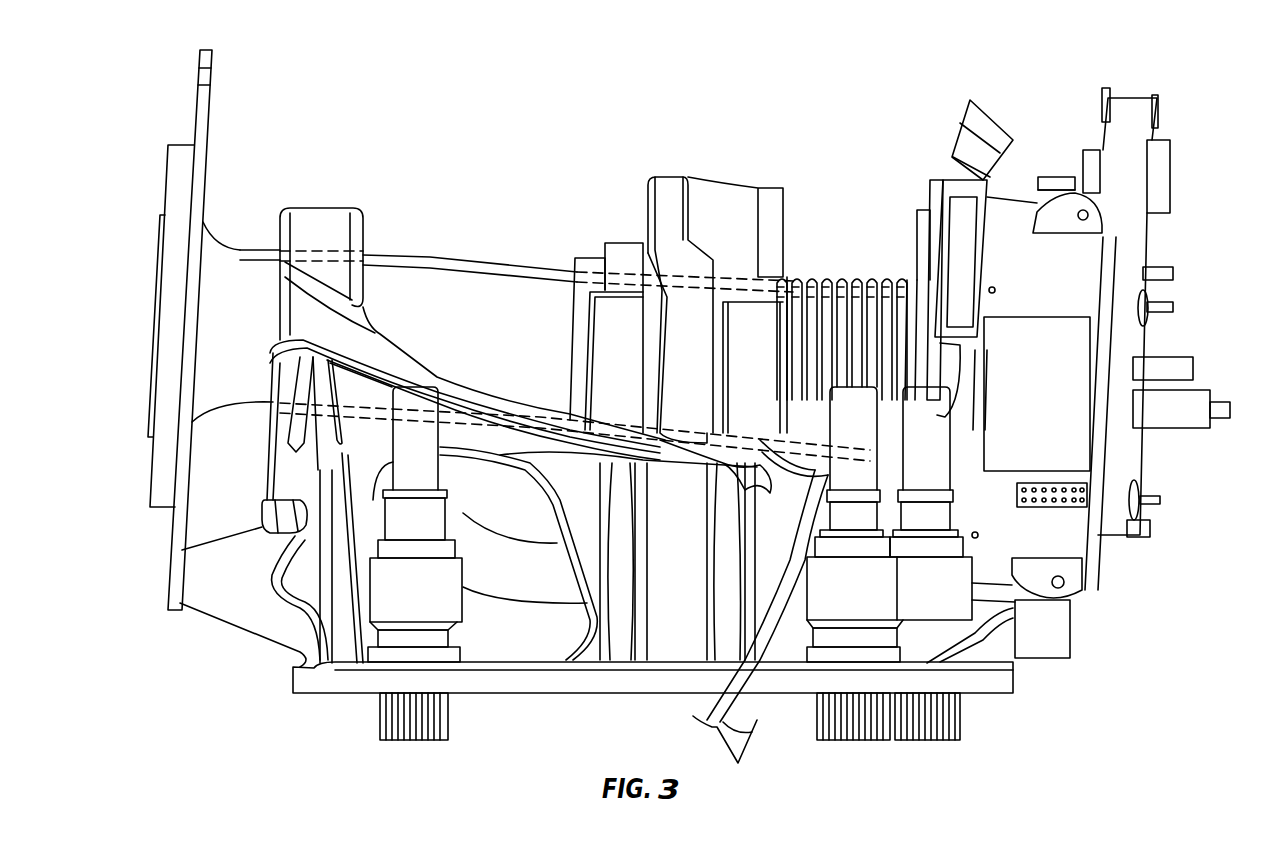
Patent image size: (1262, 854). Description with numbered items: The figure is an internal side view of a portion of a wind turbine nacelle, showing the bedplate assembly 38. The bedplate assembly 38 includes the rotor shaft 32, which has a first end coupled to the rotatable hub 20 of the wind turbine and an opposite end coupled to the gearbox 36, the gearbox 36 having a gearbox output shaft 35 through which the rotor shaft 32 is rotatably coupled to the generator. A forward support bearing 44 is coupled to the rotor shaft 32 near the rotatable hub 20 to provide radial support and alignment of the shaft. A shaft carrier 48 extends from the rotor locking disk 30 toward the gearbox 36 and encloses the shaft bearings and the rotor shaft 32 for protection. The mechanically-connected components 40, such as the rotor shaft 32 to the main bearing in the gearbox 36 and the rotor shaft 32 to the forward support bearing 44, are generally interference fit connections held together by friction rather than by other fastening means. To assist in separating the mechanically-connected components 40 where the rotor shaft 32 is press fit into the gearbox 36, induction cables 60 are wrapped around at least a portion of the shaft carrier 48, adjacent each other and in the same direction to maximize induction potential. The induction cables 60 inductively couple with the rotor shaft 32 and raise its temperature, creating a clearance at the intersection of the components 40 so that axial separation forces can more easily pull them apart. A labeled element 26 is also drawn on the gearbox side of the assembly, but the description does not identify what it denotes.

The rotatable hub 20 is at (141, 378).
The frame 26 is at (1048, 411).
The rotor locking disk 30 is at (208, 120).
The rotor shaft 32 is at (430, 290).
The gearbox output shaft 35 is at (1180, 402).
The gearbox 36 is at (1007, 260).
The bedplate assembly 38 is at (265, 618).
The mechanically-connected components 40 is at (360, 260).
The forward support bearing 44 is at (323, 232).
The shaft carrier 48 is at (560, 273).
The induction cables 60 is at (860, 276).